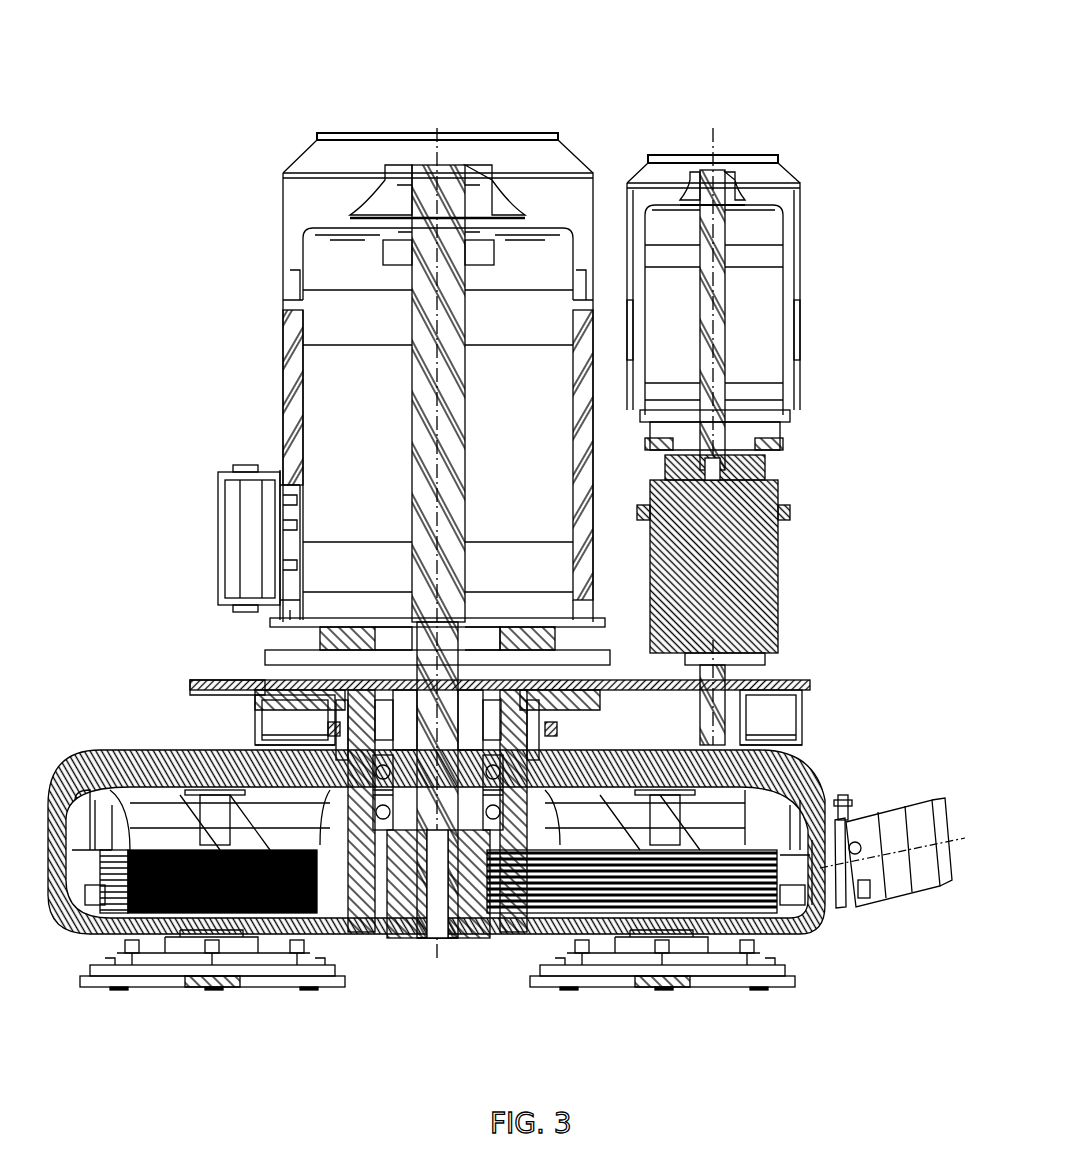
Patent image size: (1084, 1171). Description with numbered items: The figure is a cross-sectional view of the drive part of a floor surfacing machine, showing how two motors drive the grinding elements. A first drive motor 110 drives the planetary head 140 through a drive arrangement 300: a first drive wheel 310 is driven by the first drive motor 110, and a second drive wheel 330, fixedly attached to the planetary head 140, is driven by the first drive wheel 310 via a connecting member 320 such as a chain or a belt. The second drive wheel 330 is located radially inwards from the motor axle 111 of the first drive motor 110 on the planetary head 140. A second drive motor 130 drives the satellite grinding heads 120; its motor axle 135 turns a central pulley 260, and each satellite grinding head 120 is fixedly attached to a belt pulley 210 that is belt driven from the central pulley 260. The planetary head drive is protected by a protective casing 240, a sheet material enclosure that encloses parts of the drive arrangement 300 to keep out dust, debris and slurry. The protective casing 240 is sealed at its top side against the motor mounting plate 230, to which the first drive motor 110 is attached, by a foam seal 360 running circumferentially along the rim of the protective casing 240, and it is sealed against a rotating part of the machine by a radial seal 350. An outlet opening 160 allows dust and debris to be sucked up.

The first drive motor 110 is at (775, 160).
The motor axle 111 is at (725, 735).
The satellite grinding head 120 is at (285, 985).
The second drive motor 130 is at (505, 158).
The motor axle 135 is at (439, 935).
The planetary head 140 is at (95, 798).
The outlet opening 160 is at (885, 895).
The belt pulley 210 is at (610, 895).
The motor mounting plate 230 is at (200, 684).
The protective casing 240 is at (260, 728).
The central pulley 260 is at (420, 930).
The drive arrangement 300 is at (470, 636).
The first drive wheel 310 is at (755, 705).
The connecting member 320 is at (260, 708).
The second drive wheel 330 is at (300, 705).
The radial seal 350 is at (326, 729).
The foam seal 360 is at (228, 678).